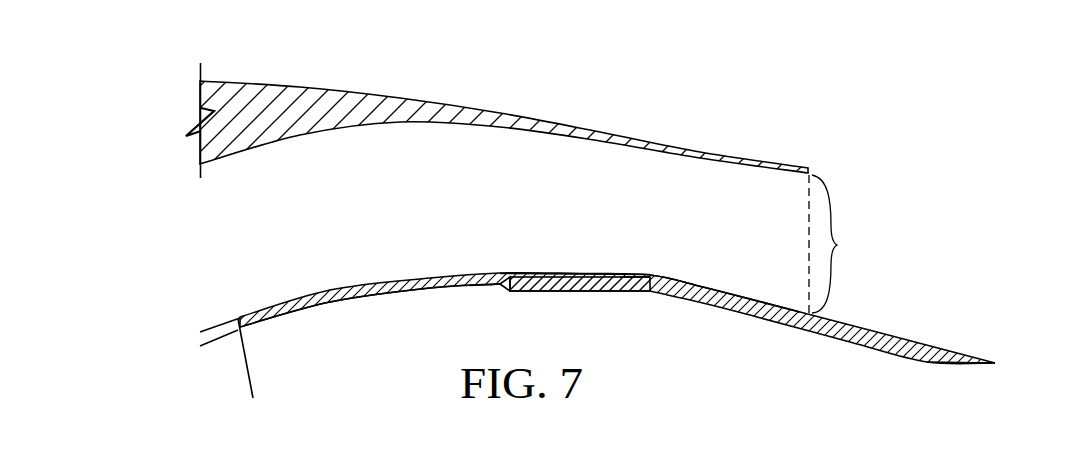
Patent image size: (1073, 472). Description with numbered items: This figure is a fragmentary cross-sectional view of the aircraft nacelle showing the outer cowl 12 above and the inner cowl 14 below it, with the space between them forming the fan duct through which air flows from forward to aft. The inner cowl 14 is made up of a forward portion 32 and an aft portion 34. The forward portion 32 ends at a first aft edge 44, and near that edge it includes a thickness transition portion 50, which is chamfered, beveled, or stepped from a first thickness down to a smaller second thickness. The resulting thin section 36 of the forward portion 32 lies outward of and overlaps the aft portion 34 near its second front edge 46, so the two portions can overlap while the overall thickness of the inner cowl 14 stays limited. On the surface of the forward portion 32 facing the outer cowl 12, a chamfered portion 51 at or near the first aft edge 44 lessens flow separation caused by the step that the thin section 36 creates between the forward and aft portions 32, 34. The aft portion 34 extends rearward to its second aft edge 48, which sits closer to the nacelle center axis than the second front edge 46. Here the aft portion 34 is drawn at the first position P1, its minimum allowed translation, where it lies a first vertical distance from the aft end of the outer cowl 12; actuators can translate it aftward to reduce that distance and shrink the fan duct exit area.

The outer cowl 12 is at (400, 105).
The inner cowl 14 is at (757, 318).
The forward portion 32 is at (323, 292).
The aft portion 34 is at (707, 289).
The thin section 36 is at (548, 272).
The first aft edge 44 is at (634, 275).
The second front edge 46 is at (507, 289).
The second aft edge 48 is at (996, 363).
The thickness transition portion 50 is at (490, 286).
The chamfered portion 51 is at (620, 272).
The first position P1 is at (836, 244).